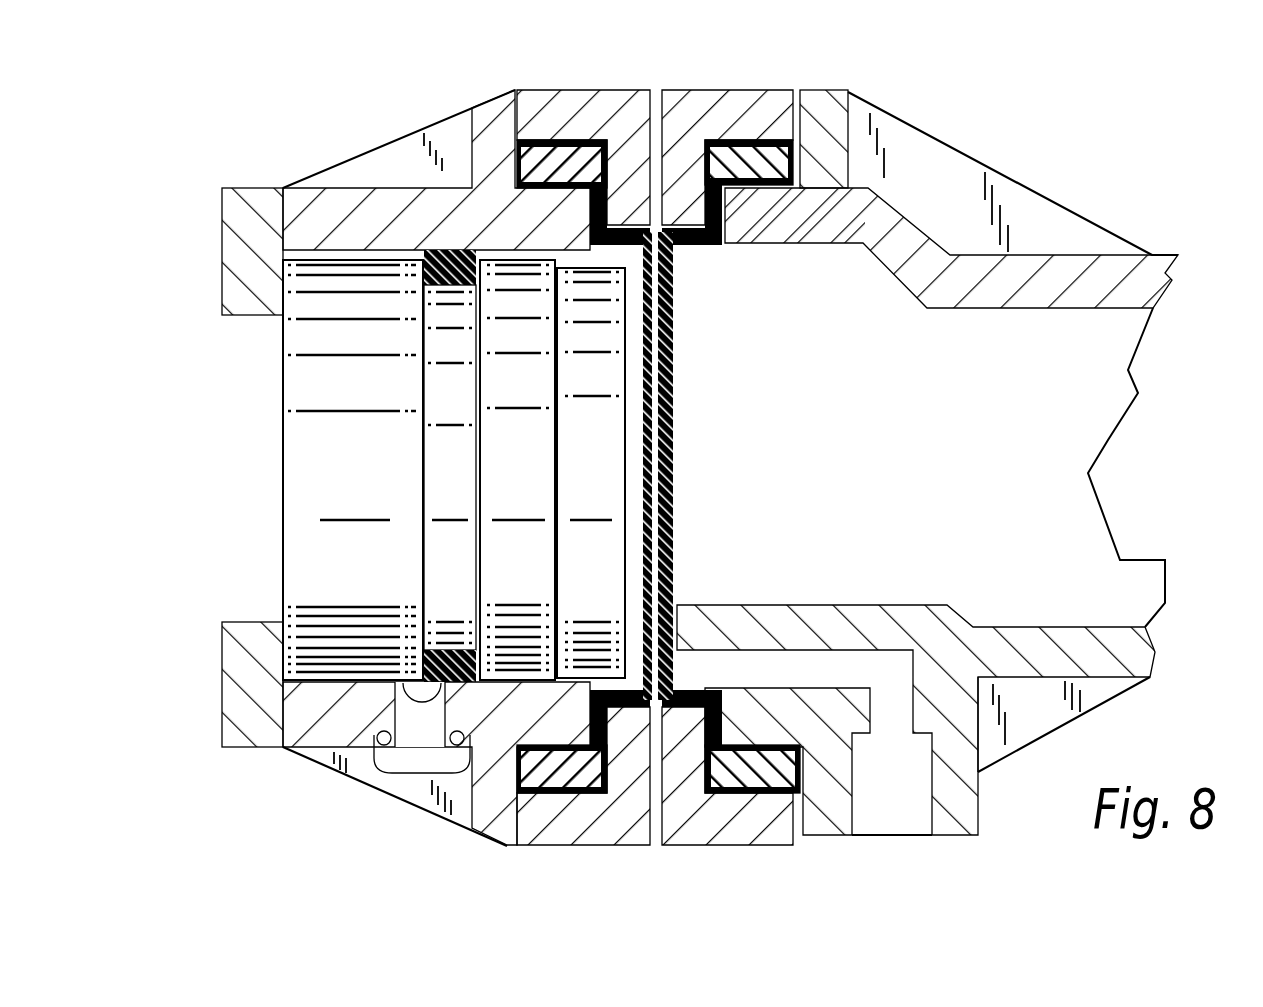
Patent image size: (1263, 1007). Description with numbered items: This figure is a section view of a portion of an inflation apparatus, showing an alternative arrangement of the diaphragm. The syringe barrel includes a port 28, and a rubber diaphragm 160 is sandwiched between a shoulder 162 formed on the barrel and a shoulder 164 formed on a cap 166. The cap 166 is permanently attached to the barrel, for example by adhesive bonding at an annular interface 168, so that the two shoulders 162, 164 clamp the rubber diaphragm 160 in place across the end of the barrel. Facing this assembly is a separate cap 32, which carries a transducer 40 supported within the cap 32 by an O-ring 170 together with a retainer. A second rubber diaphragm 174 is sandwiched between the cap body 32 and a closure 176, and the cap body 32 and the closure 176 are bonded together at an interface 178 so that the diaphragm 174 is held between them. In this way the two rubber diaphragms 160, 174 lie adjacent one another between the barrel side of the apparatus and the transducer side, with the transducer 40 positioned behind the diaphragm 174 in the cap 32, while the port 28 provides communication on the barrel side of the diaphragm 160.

The port 28 is at (903, 835).
The cap 32 is at (300, 750).
The transducer 40 is at (600, 468).
The rubber diaphragm 160 is at (665, 468).
The shoulder 162 is at (715, 248).
The shoulder 164 is at (737, 130).
The cap 166 is at (703, 90).
The annular interface 168 is at (840, 92).
The O-ring 170 is at (455, 752).
The rubber diaphragm 174 is at (653, 393).
The closure 176 is at (627, 845).
The interface 178 is at (502, 828).